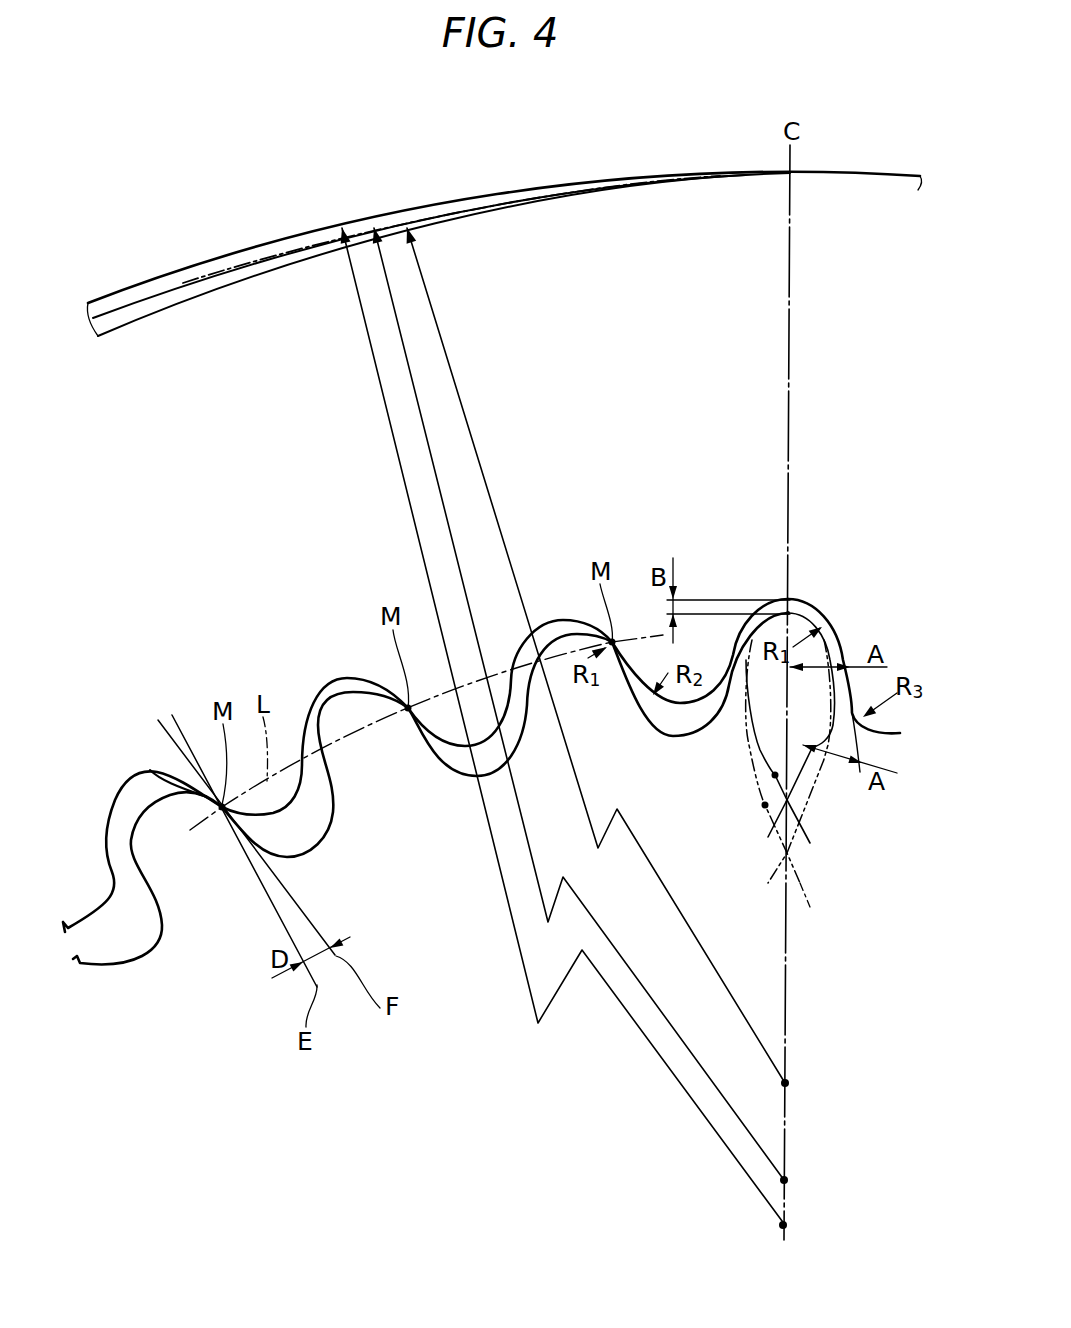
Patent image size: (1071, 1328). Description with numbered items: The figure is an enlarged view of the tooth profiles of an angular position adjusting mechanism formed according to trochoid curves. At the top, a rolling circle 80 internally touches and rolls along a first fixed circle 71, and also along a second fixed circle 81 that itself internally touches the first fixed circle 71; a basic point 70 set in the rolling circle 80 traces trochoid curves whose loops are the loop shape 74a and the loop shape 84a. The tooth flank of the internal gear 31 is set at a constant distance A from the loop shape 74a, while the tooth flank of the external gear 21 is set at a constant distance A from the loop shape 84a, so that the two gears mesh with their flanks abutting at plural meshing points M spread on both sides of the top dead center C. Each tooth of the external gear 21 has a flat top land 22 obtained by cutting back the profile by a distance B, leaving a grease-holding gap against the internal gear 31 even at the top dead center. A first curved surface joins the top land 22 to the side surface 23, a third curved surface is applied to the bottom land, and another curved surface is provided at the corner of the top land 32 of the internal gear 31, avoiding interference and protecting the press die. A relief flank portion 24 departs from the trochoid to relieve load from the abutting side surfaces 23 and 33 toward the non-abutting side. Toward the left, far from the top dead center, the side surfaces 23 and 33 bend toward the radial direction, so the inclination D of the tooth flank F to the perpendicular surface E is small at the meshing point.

The external gear 21 is at (724, 613).
The top land 22 is at (773, 613).
The side surface 23 is at (481, 734).
The tooth flank portion (relief flank portion) 24 is at (332, 695).
The internal gear 31 is at (567, 620).
The top land 32 is at (673, 705).
The side surface 33 is at (150, 770).
The basic point 70 is at (783, 706).
The first fixed circle 71 is at (223, 258).
The rolling circle 80 is at (160, 311).
The second fixed circle 81 is at (183, 283).
The loop shape 84a is at (775, 775).
The loop shape 74a is at (765, 805).